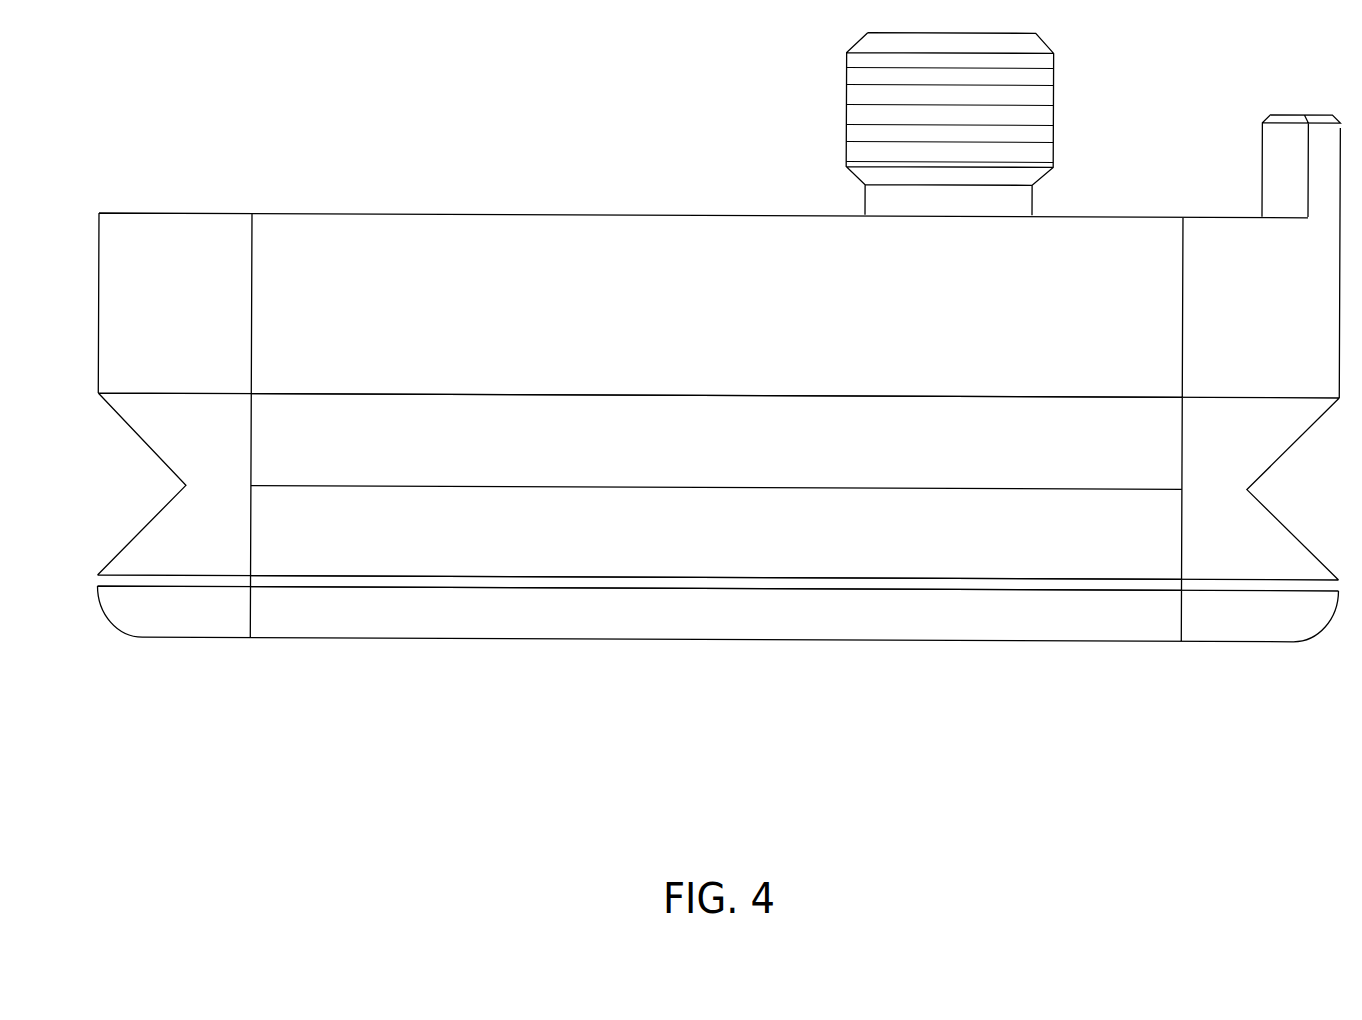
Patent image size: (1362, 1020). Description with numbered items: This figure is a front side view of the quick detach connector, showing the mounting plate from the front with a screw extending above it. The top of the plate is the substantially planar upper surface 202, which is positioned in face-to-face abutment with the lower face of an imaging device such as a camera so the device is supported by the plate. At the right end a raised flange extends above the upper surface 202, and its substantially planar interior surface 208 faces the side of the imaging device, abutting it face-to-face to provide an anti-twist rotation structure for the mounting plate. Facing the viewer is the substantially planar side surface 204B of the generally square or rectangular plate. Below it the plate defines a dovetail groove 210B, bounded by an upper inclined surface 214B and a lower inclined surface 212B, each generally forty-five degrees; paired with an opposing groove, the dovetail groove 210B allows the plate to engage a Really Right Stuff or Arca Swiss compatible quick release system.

The upper surface 202 is at (690, 212).
The interior surface 208 is at (1262, 152).
The side surface 204B is at (746, 376).
The upper inclined surface 214B is at (746, 471).
The lower inclined surface 212B is at (746, 558).
The dovetail groove 210B is at (950, 530).